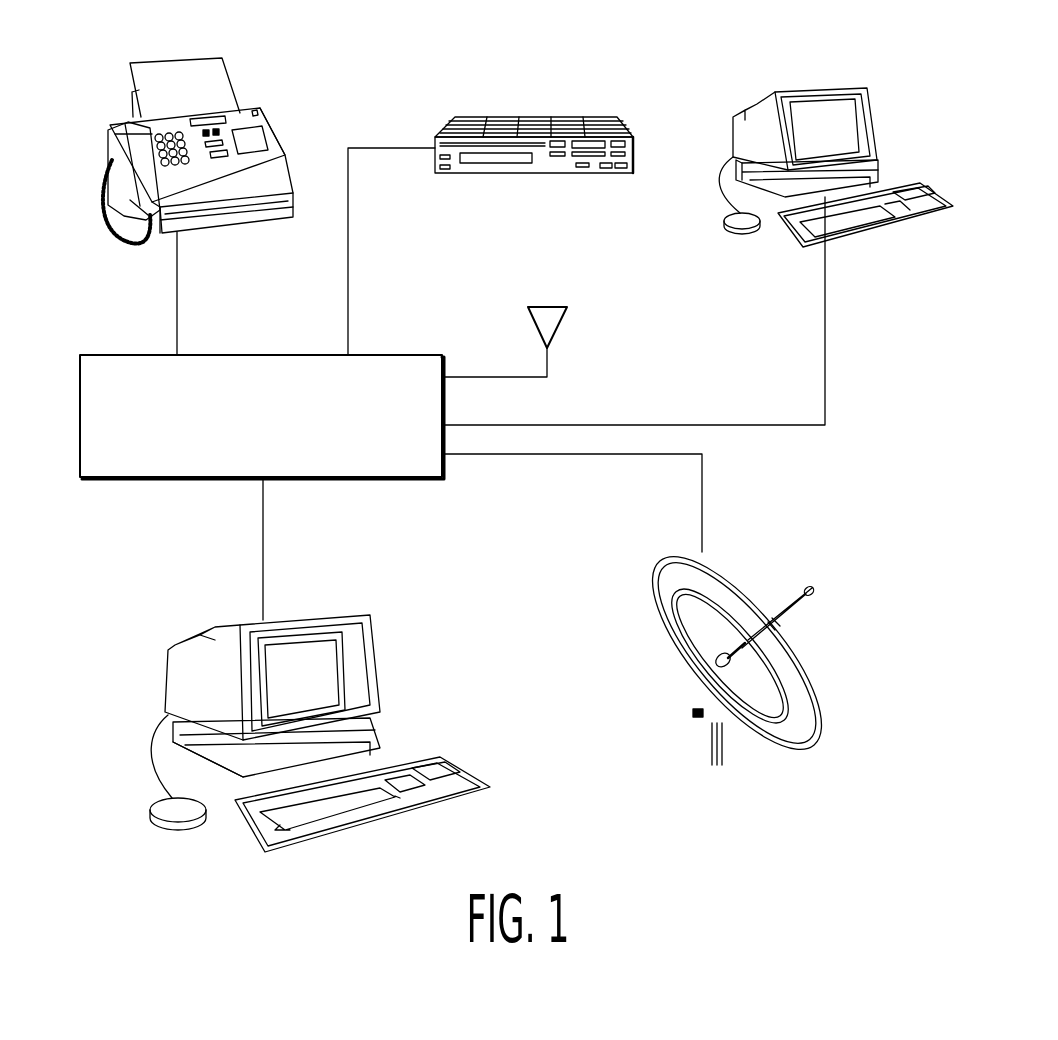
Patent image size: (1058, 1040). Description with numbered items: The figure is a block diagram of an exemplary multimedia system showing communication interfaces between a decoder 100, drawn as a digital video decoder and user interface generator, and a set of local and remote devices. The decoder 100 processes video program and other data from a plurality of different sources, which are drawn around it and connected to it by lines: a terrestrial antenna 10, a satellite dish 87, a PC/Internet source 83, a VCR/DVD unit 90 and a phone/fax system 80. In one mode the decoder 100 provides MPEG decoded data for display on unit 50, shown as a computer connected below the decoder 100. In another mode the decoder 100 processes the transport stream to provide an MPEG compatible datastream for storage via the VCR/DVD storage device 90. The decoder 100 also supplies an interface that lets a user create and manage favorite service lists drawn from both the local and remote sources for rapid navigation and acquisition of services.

The decoder 100 is at (225, 365).
The phone/fax system 80 is at (232, 92).
The VCR/DVD unit 90 is at (600, 117).
The PC/Internet source 83 is at (867, 117).
The terrestrial antenna 10 is at (552, 325).
The display unit 50 is at (365, 660).
The satellite dish 87 is at (807, 673).